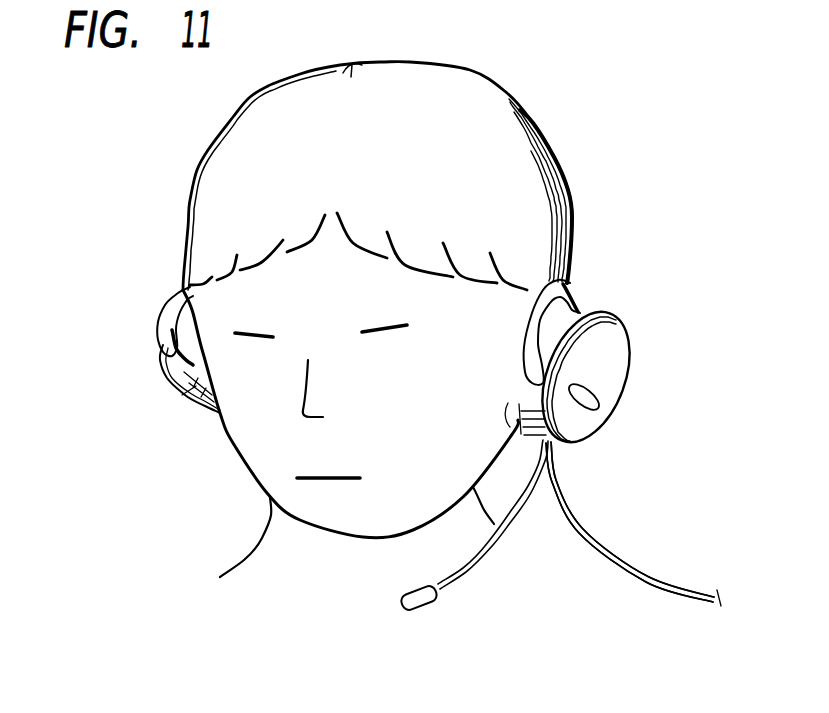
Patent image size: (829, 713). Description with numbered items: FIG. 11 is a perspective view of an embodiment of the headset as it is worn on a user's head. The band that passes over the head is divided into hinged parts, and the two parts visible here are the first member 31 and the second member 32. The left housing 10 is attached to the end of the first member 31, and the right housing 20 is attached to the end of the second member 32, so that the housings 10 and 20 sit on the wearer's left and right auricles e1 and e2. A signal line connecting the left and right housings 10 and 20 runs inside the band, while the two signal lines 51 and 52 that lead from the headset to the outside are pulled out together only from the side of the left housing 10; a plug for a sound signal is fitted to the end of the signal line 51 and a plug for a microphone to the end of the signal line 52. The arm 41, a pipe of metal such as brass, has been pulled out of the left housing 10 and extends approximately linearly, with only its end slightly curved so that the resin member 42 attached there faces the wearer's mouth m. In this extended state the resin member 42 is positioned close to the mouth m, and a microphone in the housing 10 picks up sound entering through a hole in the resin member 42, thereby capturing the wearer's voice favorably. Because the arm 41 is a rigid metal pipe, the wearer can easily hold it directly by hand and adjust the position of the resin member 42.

The left housing 10 is at (627, 367).
The right housing 20 is at (157, 327).
The first member 31 is at (577, 297).
The second member 32 is at (180, 293).
The arm 41 is at (503, 541).
The resin member 42 is at (428, 601).
The signal line 51 is at (663, 577).
The signal line 52 is at (635, 522).
The auricle e1 is at (600, 284).
The auricle e2 is at (151, 266).
The mouth m is at (347, 482).